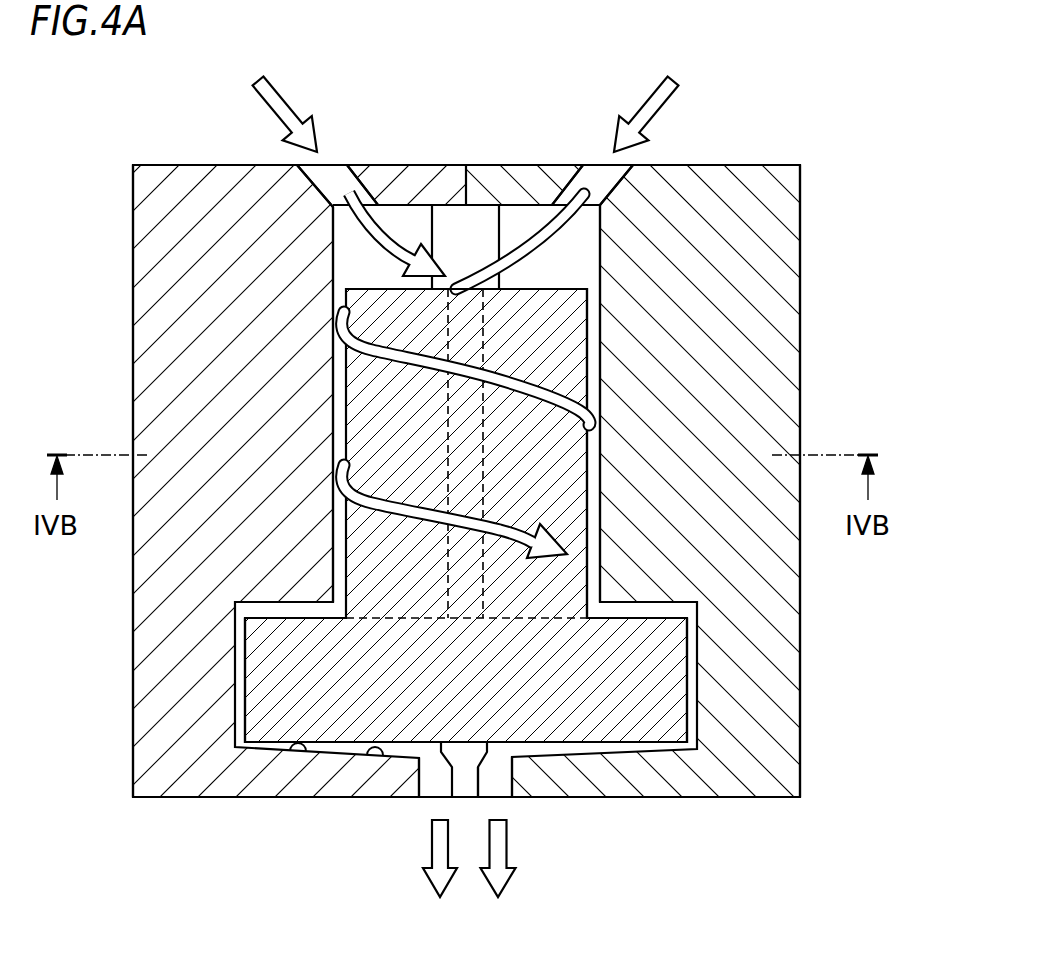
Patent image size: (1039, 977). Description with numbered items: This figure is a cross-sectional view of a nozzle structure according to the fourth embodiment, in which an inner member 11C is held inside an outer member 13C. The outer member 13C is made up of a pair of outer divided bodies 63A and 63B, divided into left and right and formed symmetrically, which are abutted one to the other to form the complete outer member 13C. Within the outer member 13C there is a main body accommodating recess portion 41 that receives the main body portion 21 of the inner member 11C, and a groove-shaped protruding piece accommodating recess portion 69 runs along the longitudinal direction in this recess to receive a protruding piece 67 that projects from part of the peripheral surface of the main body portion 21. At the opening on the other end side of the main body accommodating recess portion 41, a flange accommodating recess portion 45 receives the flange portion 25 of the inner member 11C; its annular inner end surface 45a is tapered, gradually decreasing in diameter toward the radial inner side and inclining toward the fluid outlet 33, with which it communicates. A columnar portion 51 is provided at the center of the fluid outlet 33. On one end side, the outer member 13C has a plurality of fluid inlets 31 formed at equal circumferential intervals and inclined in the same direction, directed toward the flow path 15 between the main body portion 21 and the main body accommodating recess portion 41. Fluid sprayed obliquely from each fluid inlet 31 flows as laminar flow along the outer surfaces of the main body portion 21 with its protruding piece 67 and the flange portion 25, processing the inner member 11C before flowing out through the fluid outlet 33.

The outer member 13C is at (808, 162).
The outer divided body 63A is at (170, 230).
The outer divided body 63B is at (785, 228).
The fluid inlet 31 is at (600, 177).
The protruding piece accommodating recess portion 69 is at (445, 232).
The main body accommodating recess portion 41 is at (338, 262).
The flow path 15 is at (592, 450).
The inner member 11C is at (598, 703).
The main body portion 21 is at (385, 385).
The flange portion 25 is at (305, 690).
The protruding piece 67 is at (485, 335).
The flange accommodating recess portion 45 is at (298, 751).
The inner end surface 45a is at (375, 755).
The fluid outlet 33 is at (445, 783).
The columnar portion 51 is at (485, 777).